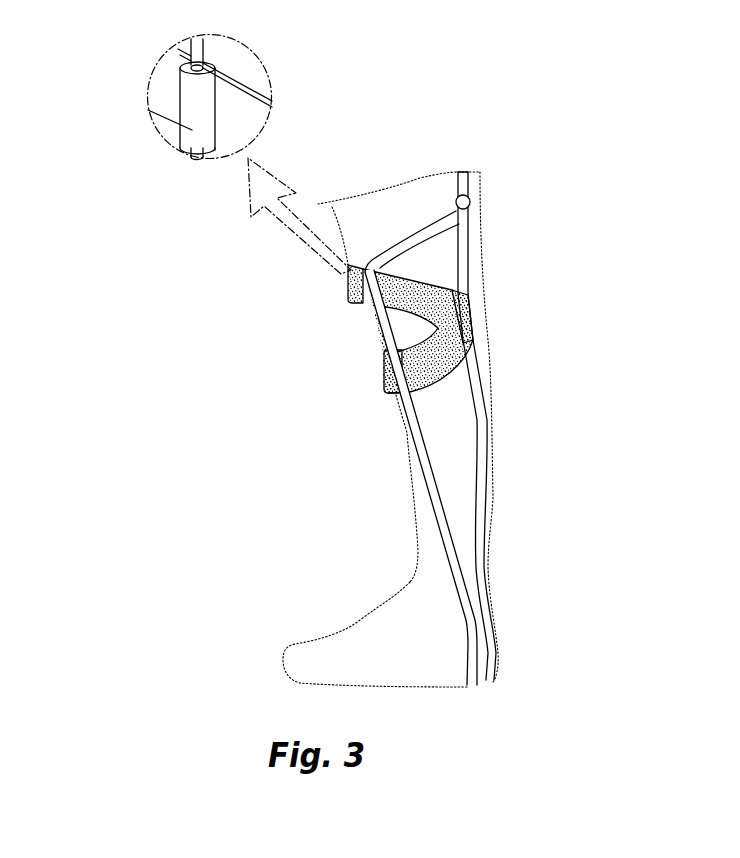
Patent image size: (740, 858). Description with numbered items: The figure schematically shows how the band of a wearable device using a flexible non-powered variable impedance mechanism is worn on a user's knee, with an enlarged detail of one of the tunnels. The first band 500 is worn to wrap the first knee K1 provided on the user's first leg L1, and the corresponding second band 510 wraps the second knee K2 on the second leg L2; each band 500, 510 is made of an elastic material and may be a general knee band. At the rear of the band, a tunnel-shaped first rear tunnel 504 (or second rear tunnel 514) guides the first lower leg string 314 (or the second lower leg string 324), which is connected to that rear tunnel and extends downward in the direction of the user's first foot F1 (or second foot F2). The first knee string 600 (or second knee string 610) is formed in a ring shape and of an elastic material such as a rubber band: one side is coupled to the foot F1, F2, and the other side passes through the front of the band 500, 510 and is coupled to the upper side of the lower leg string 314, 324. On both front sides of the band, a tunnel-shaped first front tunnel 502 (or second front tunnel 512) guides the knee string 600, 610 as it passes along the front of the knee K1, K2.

The first band 500 is at (264, 166).
The second band 510 is at (415, 293).
The first front tunnel 502 is at (216, 240).
The second front tunnel 512 is at (190, 108).
The first rear tunnel 504 is at (542, 316).
The second rear tunnel 514 is at (458, 317).
The (1-2)th lower string 314 is at (537, 426).
The (2-2)th lower string 324 is at (458, 256).
The first knee string 600 is at (361, 477).
The second knee string 610 is at (433, 497).
The first knee K1 is at (361, 331).
The second knee K2 is at (403, 327).
The first leg L1 is at (470, 427).
The second leg L2 is at (458, 457).
The first foot F1 is at (347, 627).
The second foot F2 is at (373, 637).